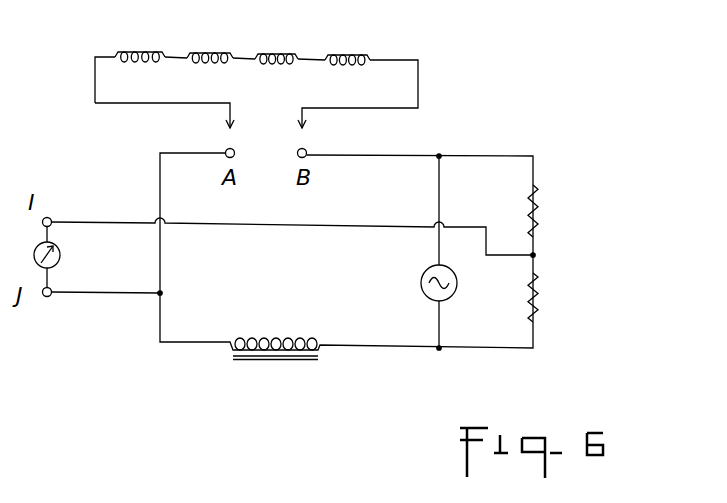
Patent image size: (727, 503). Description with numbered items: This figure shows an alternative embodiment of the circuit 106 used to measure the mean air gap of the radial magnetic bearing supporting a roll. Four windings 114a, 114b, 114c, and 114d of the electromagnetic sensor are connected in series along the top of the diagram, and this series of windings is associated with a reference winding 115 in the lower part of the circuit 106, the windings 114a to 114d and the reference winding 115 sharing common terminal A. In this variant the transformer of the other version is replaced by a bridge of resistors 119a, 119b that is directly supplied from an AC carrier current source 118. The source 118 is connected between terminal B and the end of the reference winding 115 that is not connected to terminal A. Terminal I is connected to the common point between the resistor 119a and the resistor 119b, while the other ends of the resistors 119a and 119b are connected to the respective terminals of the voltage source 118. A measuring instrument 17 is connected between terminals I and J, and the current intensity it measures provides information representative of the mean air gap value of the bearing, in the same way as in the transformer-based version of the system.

The winding 114a is at (137, 39).
The winding 114b is at (208, 51).
The winding 114c is at (280, 52).
The winding 114d is at (349, 53).
The measuring instrument 17 is at (33, 257).
The circuit 106 is at (131, 306).
The reference winding 115 is at (297, 338).
The AC carrier current source 118 is at (425, 294).
The resistor 119a is at (538, 210).
The resistor 119b is at (538, 298).